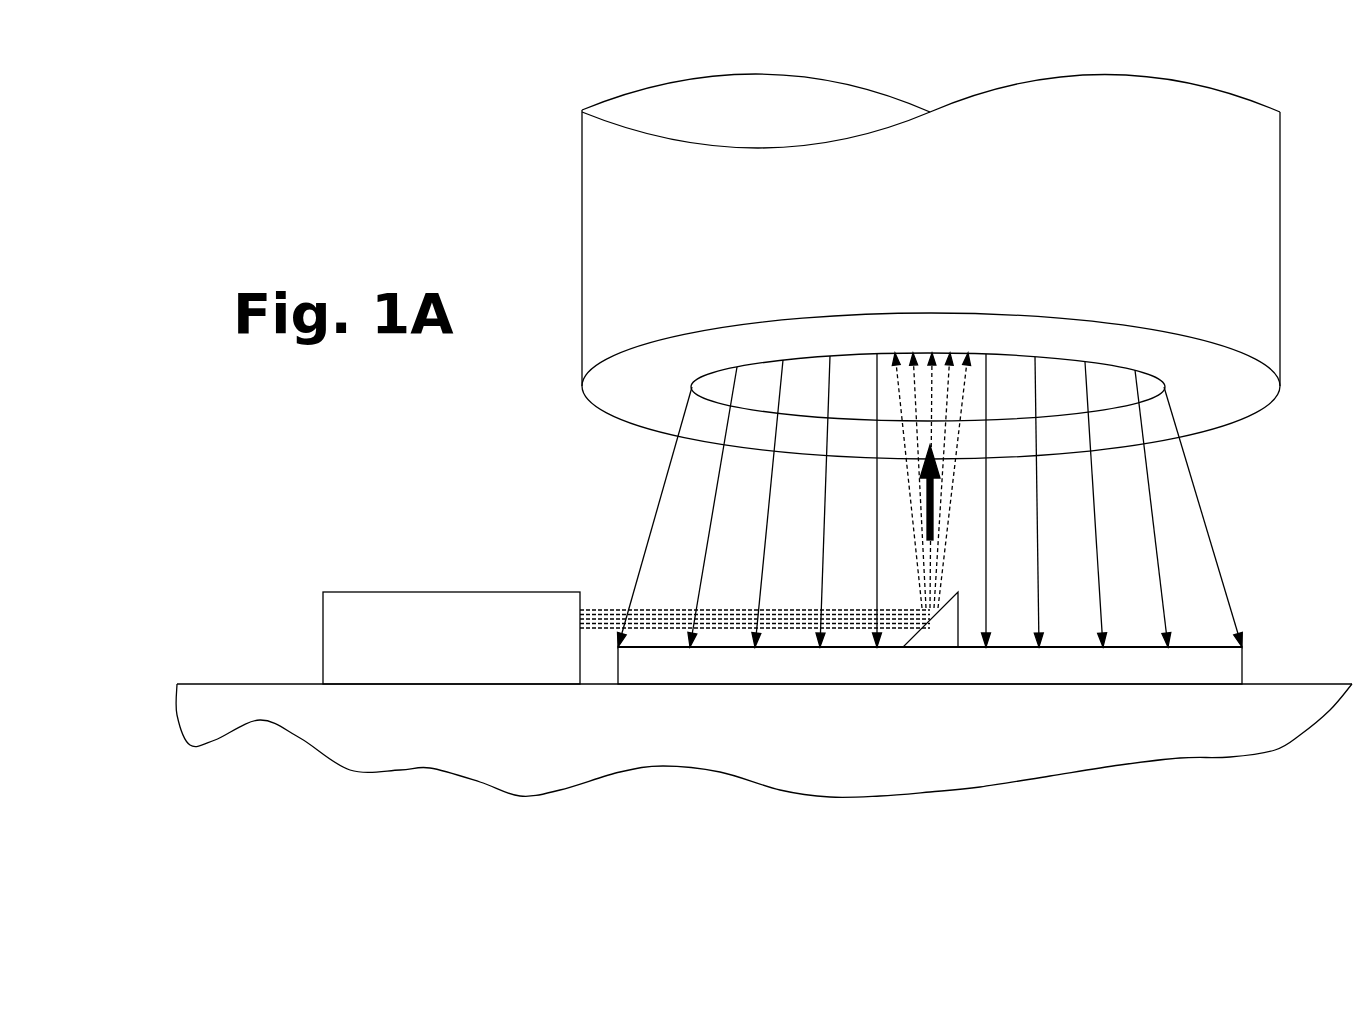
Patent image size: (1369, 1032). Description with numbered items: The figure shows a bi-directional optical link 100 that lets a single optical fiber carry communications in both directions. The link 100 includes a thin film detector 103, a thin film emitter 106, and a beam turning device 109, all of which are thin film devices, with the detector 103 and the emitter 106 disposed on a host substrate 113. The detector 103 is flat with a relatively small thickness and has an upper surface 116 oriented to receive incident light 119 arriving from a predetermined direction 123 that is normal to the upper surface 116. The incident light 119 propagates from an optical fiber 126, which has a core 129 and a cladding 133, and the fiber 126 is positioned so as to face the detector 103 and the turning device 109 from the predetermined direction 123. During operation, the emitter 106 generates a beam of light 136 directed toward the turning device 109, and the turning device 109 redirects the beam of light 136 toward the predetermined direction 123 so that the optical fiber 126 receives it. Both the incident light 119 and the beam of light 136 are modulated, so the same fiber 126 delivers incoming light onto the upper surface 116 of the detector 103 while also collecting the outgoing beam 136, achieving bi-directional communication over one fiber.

The bi-directional optical link 100 is at (448, 393).
The thin film detector 103 is at (1054, 675).
The thin film emitter 106 is at (362, 590).
The beam turning device 109 is at (935, 640).
The host substrate 113 is at (1135, 752).
The upper surface 116 is at (1218, 634).
The incident light 119 is at (1235, 576).
The predetermined direction 123 is at (943, 493).
The optical fiber 126 is at (1268, 277).
The core 129 is at (746, 398).
The cladding 133 is at (632, 412).
The beam of light 136 is at (609, 600).